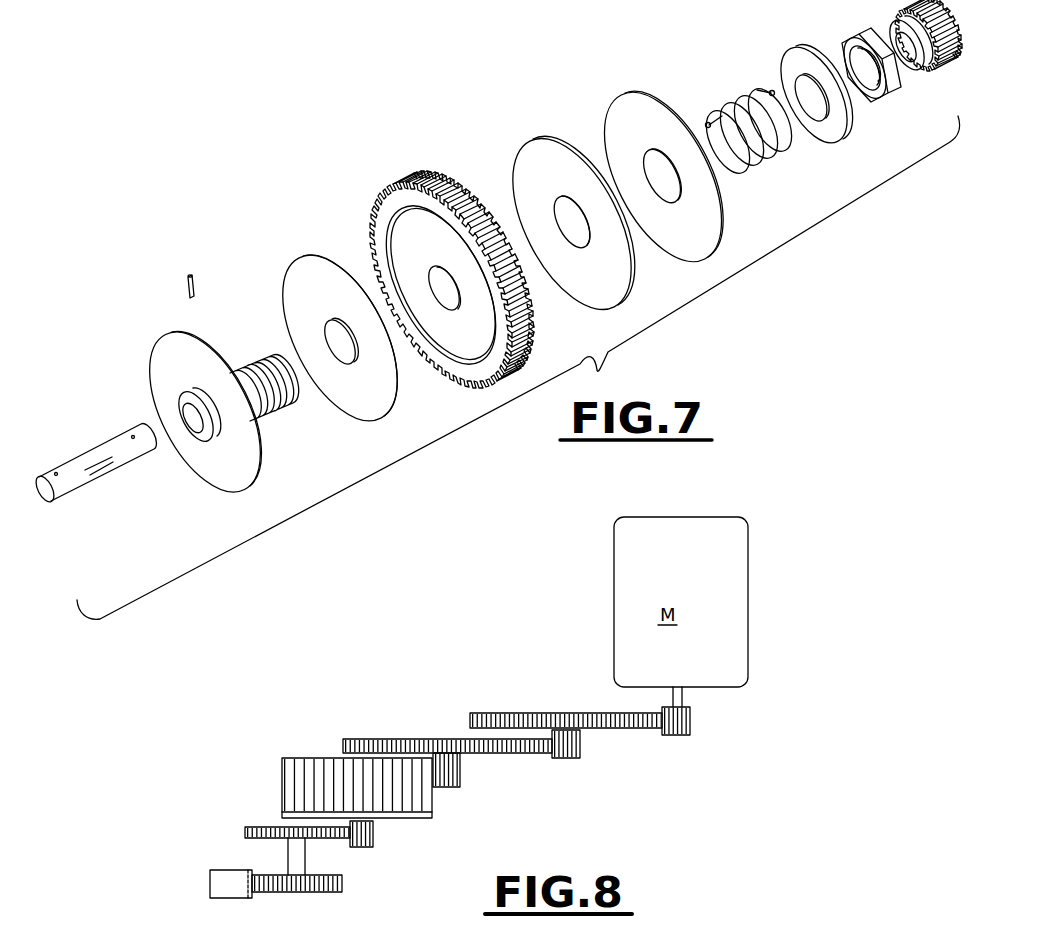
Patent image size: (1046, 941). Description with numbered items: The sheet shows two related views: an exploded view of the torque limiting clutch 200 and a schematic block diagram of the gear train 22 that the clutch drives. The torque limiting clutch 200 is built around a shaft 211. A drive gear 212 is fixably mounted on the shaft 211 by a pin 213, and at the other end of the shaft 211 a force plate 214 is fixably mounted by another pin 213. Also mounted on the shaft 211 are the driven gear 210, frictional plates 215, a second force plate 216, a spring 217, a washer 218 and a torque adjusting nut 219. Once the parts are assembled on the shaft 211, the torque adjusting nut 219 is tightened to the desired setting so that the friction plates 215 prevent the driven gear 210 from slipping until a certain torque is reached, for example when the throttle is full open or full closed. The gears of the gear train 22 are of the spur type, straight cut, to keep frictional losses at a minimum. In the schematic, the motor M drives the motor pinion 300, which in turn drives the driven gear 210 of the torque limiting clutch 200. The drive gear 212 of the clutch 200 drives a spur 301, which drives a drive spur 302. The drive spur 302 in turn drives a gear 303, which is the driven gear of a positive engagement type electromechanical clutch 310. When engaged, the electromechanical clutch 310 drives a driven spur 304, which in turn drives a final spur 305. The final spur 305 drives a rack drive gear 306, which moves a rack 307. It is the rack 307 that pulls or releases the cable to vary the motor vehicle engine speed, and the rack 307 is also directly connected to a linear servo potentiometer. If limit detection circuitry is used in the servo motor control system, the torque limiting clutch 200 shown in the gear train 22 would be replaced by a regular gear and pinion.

In FIG. 8, the gear train 22 is at (709, 760).
In FIG. 7, the torque limiting clutch 200 is at (366, 124).
In FIG. 8, the torque limiting clutch 200 is at (645, 749).
In FIG. 7, the driven gear 210 is at (382, 205).
In FIG. 8, the driven gear 210 is at (507, 713).
In FIG. 7, the shaft 211 is at (78, 453).
In FIG. 7, the drive gear 212 is at (929, 10).
In FIG. 8, the drive gear 212 is at (573, 758).
In FIG. 7, the pin 213 is at (195, 287).
In FIG. 7, the force plate 214 is at (150, 363).
In FIG. 7, the frictional plates 215 is at (287, 292).
In FIG. 7, the second force plate 216 is at (607, 120).
In FIG. 7, the spring 217 is at (723, 110).
In FIG. 7, the washer 218 is at (783, 68).
In FIG. 7, the torque adjusting nut 219 is at (847, 42).
In FIG. 8, the motor pinion 300 is at (692, 720).
In FIG. 8, the spur 301 is at (383, 739).
In FIG. 8, the drive spur 302 is at (460, 762).
In FIG. 8, the gear 303 is at (282, 786).
In FIG. 8, the driven spur 304 is at (373, 833).
In FIG. 8, the final spur 305 is at (245, 833).
In FIG. 8, the rack drive gear 306 is at (342, 882).
In FIG. 8, the rack 307 is at (233, 898).
In FIG. 8, the positive engagement type electromechanical clutch 310 is at (443, 801).